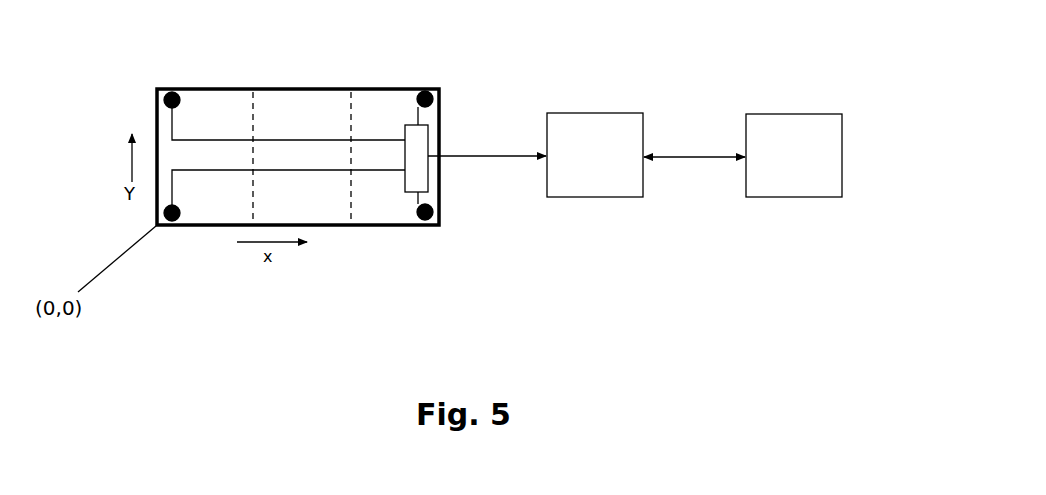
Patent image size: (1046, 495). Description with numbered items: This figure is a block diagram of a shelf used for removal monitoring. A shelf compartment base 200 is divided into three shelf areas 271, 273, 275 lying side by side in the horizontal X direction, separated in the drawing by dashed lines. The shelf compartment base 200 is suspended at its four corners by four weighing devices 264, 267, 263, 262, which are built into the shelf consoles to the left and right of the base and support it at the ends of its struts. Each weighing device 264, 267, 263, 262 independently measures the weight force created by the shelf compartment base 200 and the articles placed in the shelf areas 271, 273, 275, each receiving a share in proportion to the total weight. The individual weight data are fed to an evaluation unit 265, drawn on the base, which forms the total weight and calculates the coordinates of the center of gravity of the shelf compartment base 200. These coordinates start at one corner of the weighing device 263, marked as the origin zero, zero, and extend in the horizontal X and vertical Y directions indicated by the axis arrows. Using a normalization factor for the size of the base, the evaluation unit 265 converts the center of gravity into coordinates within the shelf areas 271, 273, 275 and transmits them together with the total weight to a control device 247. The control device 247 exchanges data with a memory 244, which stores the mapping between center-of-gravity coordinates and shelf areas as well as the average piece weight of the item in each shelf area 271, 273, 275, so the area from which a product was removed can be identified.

The shelf compartment base 200 is at (303, 88).
The weighing device 264 is at (174, 92).
The second corner electrode 267 is at (430, 90).
The weighing device 263 is at (170, 220).
The weighing device 262 is at (426, 220).
The evaluation unit 265 is at (433, 138).
The first zone 271 is at (212, 231).
The second zone 273 is at (329, 231).
The third zone 275 is at (382, 231).
The controller 247 is at (596, 113).
The memory 244 is at (795, 114).